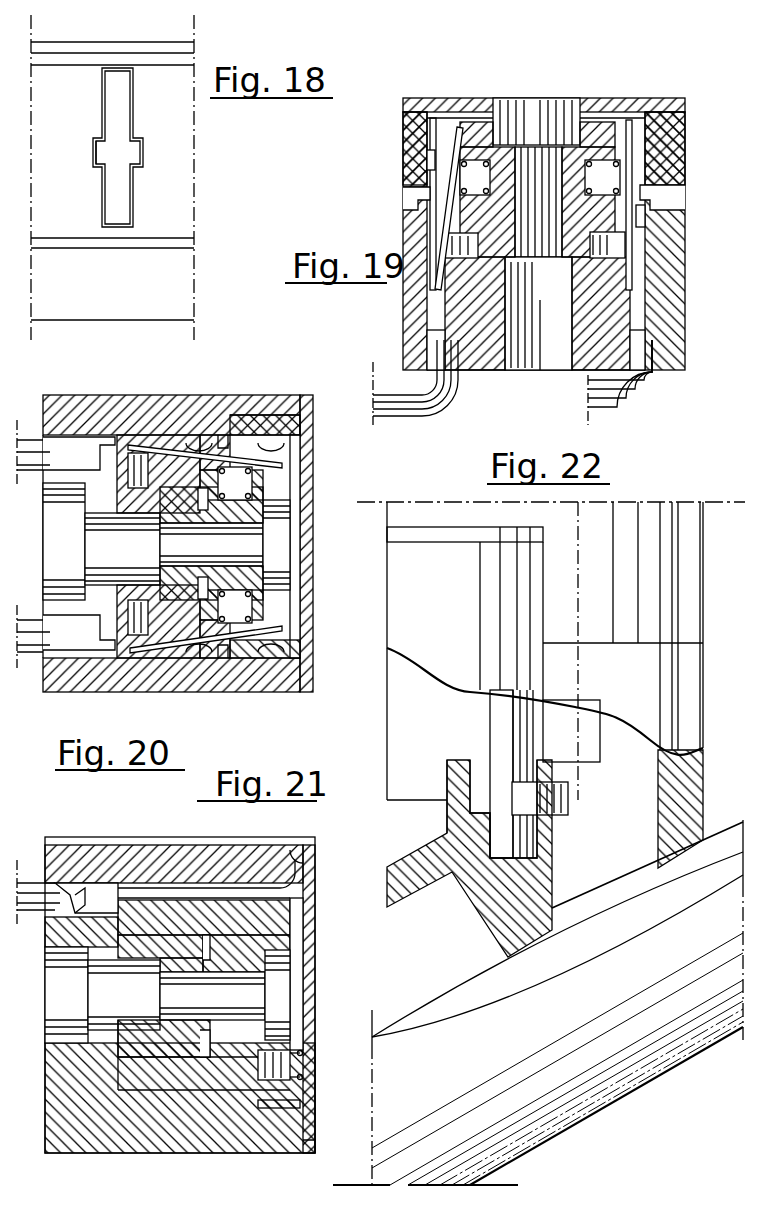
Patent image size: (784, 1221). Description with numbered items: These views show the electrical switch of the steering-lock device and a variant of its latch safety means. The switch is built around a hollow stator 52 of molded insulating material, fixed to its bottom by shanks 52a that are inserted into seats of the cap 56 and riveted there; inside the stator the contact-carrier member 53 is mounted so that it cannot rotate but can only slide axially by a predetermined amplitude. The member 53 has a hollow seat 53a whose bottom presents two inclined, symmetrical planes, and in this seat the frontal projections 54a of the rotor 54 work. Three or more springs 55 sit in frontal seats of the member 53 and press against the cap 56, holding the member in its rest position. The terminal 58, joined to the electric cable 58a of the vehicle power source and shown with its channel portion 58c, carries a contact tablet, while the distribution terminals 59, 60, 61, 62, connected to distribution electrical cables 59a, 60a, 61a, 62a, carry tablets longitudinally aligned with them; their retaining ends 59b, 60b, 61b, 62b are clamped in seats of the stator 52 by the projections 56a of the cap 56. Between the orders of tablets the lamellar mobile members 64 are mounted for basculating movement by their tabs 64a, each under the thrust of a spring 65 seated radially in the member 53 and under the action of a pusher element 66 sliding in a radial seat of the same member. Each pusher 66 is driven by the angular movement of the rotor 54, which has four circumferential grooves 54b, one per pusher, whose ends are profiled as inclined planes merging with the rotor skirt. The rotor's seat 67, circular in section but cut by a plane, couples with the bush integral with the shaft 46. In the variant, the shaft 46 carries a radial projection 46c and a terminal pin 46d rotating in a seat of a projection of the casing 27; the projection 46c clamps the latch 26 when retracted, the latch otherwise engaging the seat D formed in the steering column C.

In FIG. 22, the latch 26 is at (637, 822).
In FIG. 22, the casing 27 is at (477, 902).
In FIG. 22, the shaft 46 is at (498, 713).
In FIG. 22, the radial projection 46c is at (570, 798).
In FIG. 22, the terminal pin 46d is at (510, 836).
In FIG. 19, the stator 52 is at (667, 310).
In FIG. 20, the stator 52 is at (182, 415).
In FIG. 21, the stator 52 is at (83, 865).
In FIG. 21, the shanks 52a is at (316, 1128).
In FIG. 18, the contact-carrier member 53 is at (168, 200).
In FIG. 19, the contact-carrier member 53 is at (605, 150).
In FIG. 20, the contact-carrier member 53 is at (178, 465).
In FIG. 21, the contact-carrier member 53 is at (142, 1080).
In FIG. 18, the hollow seat 53a is at (143, 150).
In FIG. 20, the hollow seat 53a is at (193, 627).
In FIG. 21, the hollow seat 53a is at (207, 1037).
In FIG. 19, the rotor 54 is at (590, 292).
In FIG. 20, the rotor 54 is at (167, 600).
In FIG. 21, the rotor 54 is at (180, 940).
In FIG. 21, the frontal projections 54a is at (203, 937).
In FIG. 19, the circumferential grooves 54b is at (608, 235).
In FIG. 21, the springs 55 is at (310, 1043).
In FIG. 19, the cap 56 is at (418, 108).
In FIG. 20, the cap 56 is at (307, 643).
In FIG. 21, the cap 56 is at (312, 888).
In FIG. 19, the projections 56a is at (657, 140).
In FIG. 20, the projections 56a is at (270, 418).
In FIG. 21, the electrical terminal 58 is at (147, 884).
In FIG. 21, the electric cable 58a is at (24, 888).
In FIG. 21, the channel bend 58c is at (306, 860).
In FIG. 19, the electrical terminal 59 is at (418, 206).
In FIG. 19, the distribution electrical cable 59a is at (397, 400).
In FIG. 19, the retaining end 59b is at (414, 180).
In FIG. 19, the electrical terminal 60 is at (655, 222).
In FIG. 19, the distribution electrical cable 60a is at (630, 405).
In FIG. 19, the retaining end 60b is at (665, 188).
In FIG. 20, the electrical terminal 61 is at (98, 652).
In FIG. 20, the distribution electrical cable 61a is at (32, 650).
In FIG. 20, the retaining end 61b is at (220, 667).
In FIG. 20, the electrical terminal 62 is at (158, 437).
In FIG. 20, the distribution electrical cable 62a is at (27, 440).
In FIG. 20, the retaining end 62b is at (220, 425).
In FIG. 18, the lamellar mobile member 64 is at (115, 80).
In FIG. 19, the lamellar mobile member 64 is at (442, 130).
In FIG. 20, the lamellar mobile member 64 is at (282, 463).
In FIG. 18, the tabs 64a is at (97, 150).
In FIG. 19, the spring 65 is at (470, 153).
In FIG. 20, the spring 65 is at (250, 483).
In FIG. 19, the pusher element 66 is at (623, 258).
In FIG. 20, the pusher element 66 is at (128, 466).
In FIG. 19, the seat 67 is at (552, 290).
In FIG. 20, the seat 67 is at (127, 550).
In FIG. 21, the seat 67 is at (127, 995).
In FIG. 22, the steering column C is at (658, 1015).
In FIG. 22, the seat D is at (553, 957).